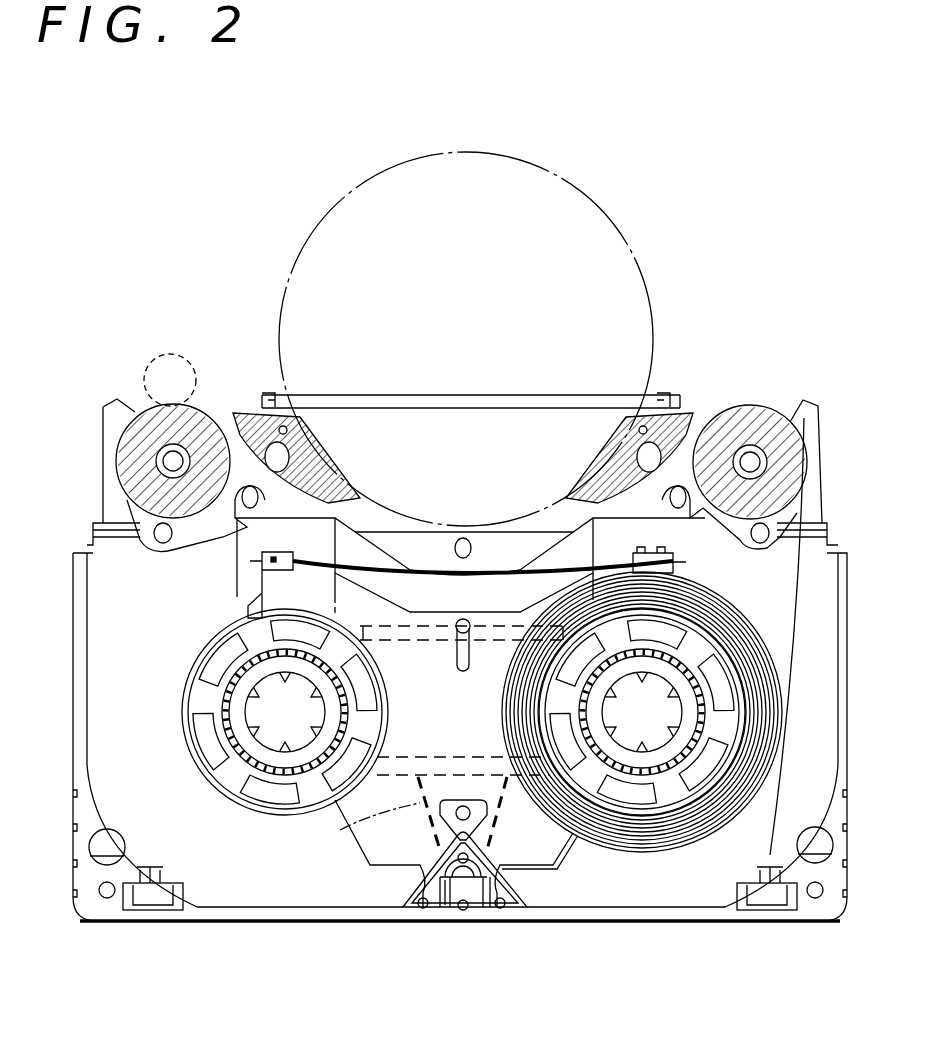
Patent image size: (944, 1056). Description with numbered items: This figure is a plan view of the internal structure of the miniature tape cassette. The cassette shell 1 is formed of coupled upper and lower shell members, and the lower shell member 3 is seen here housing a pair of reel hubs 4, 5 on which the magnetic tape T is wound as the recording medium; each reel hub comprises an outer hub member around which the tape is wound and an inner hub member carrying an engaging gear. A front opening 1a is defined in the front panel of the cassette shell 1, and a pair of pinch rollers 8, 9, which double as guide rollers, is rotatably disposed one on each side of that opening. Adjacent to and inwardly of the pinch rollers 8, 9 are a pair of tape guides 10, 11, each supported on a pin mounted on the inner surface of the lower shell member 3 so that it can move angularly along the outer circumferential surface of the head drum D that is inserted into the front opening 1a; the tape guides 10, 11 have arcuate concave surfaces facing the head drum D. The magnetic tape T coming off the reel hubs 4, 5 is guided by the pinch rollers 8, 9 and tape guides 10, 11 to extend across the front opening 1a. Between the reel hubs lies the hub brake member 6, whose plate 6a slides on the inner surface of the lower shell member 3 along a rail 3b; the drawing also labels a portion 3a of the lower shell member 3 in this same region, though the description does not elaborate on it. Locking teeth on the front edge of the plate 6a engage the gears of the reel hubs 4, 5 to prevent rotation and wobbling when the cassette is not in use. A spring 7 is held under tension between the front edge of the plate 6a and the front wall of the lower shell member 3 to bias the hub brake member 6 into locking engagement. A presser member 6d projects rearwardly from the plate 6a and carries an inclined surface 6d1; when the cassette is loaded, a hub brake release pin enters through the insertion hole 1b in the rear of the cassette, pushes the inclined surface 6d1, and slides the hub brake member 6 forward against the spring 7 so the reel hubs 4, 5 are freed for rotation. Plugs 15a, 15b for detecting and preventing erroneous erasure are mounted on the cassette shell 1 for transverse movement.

The cassette shell 1 is at (690, 920).
The front opening 1a is at (421, 393).
The insertion hole 1b is at (472, 920).
The lower shell member 3 is at (313, 920).
The head mounting plate of chassis 3a is at (498, 540).
The rail 3b is at (410, 800).
The reel hub 4 is at (715, 710).
The reel hub 5 is at (207, 727).
The hub brake member 6 is at (535, 868).
The plate 6a is at (387, 837).
The presser member 6d is at (440, 917).
The upper inclined surface 6d1 is at (493, 917).
The spring 7 is at (375, 558).
The pinch roller 8 is at (752, 400).
The pinch roller 9 is at (185, 730).
The tape guide 10 is at (689, 573).
The tape guide 11 is at (236, 412).
The plug 15a is at (773, 905).
The plug 15b is at (153, 905).
The head drum D is at (597, 196).
The magnetic tape T is at (637, 845).